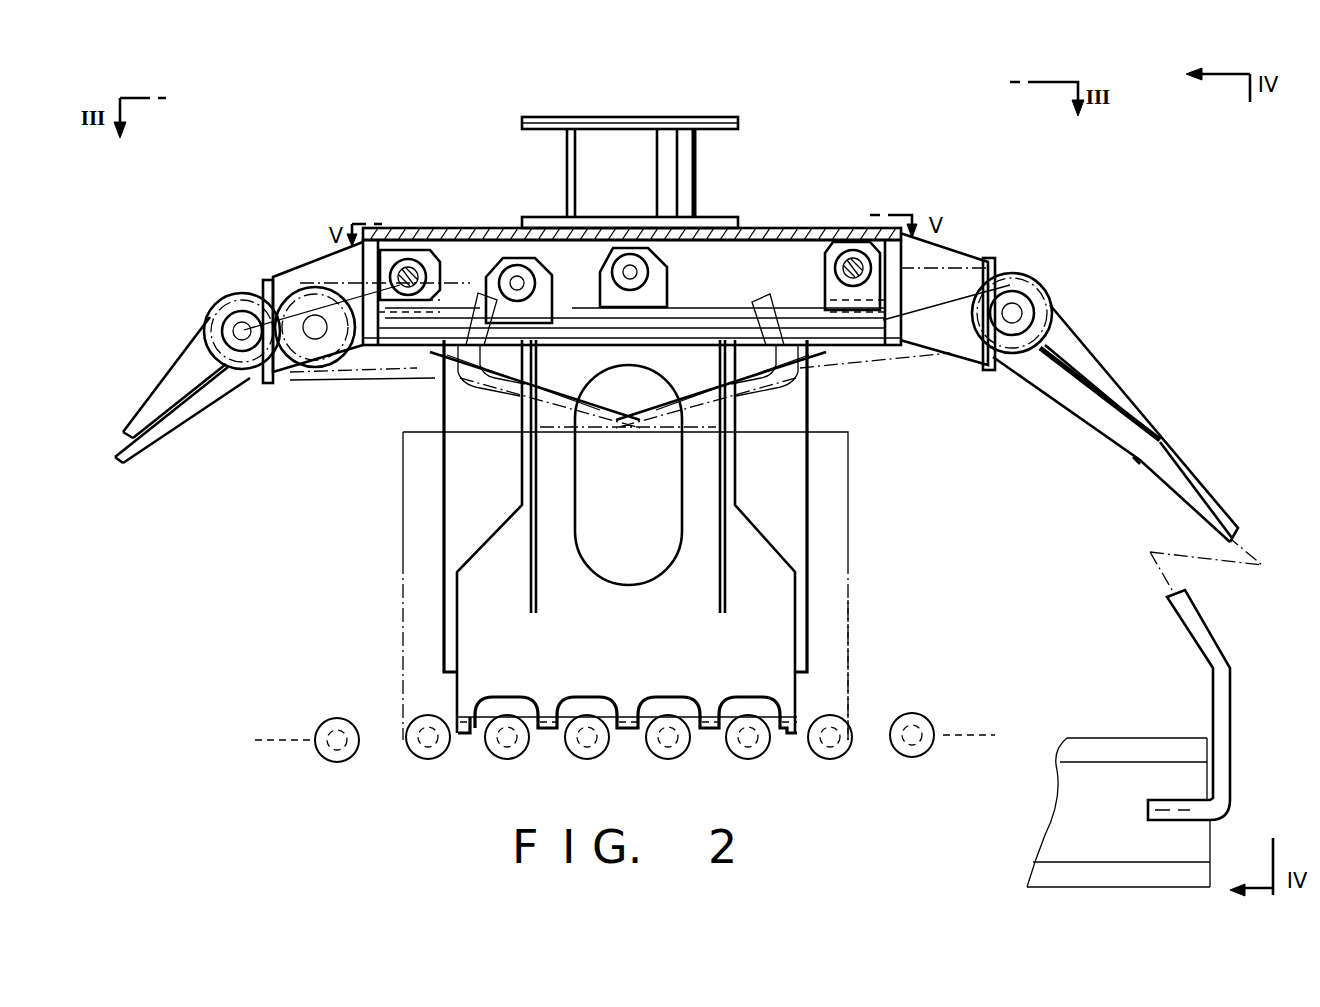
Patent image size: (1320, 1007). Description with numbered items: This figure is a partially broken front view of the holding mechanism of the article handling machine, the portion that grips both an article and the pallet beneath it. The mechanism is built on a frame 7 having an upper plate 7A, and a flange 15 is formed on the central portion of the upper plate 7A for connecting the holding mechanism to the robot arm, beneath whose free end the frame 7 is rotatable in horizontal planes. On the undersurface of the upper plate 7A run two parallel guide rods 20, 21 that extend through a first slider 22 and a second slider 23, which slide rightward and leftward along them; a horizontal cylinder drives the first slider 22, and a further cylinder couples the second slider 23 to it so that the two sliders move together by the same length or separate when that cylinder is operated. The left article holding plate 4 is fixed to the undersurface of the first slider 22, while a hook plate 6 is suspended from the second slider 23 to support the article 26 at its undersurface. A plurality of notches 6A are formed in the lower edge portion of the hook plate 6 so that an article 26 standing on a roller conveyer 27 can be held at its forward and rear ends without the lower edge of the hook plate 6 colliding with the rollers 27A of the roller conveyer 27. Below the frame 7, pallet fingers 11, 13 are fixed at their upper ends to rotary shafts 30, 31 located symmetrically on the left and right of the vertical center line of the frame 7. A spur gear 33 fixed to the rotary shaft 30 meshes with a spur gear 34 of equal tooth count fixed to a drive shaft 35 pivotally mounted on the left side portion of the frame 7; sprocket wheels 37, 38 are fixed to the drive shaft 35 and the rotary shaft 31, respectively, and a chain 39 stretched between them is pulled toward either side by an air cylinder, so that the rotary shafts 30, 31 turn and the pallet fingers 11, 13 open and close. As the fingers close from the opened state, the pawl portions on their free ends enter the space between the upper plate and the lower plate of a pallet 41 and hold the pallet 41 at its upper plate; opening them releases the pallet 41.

The flange 15 is at (740, 120).
The upper plate 7A is at (778, 228).
The frame 7 is at (910, 226).
The guide rod 20 is at (852, 262).
The guide rod 21 is at (410, 270).
The first slider 22 is at (708, 308).
The second slider 23 is at (560, 308).
The sprocket wheel 37 is at (314, 300).
The spur gear 33 is at (262, 300).
The spur gear 34 is at (305, 370).
The drive shaft 35 is at (327, 345).
The rotary shaft 30 is at (243, 336).
The pallet finger 11 is at (142, 400).
The chain 39 is at (950, 275).
The sprocket wheel 38 is at (1035, 285).
The rotary shaft 31 is at (1017, 312).
The pallet finger 13 is at (1190, 480).
The article holding plate 4 is at (810, 495).
The hook plate 6 is at (815, 608).
The notch 6A is at (810, 700).
The article 26 is at (848, 655).
The roller conveyer 27 is at (700, 753).
The roller 27A is at (360, 752).
The pallet 41 is at (1125, 738).